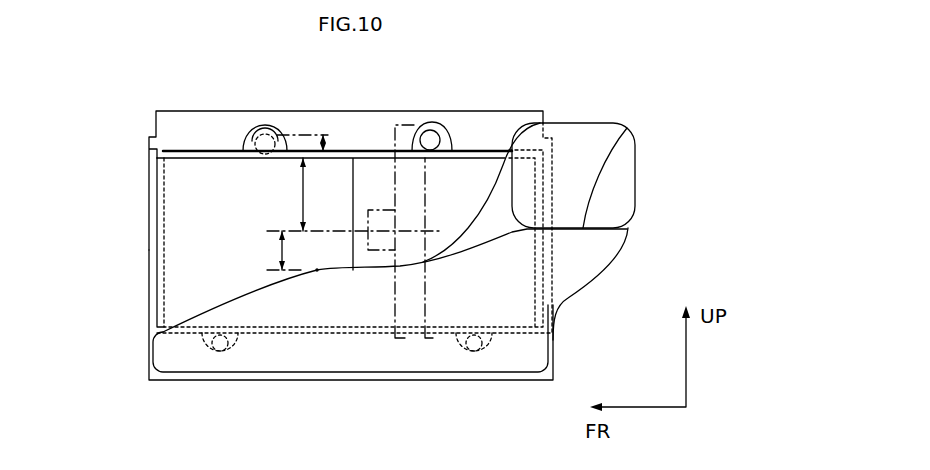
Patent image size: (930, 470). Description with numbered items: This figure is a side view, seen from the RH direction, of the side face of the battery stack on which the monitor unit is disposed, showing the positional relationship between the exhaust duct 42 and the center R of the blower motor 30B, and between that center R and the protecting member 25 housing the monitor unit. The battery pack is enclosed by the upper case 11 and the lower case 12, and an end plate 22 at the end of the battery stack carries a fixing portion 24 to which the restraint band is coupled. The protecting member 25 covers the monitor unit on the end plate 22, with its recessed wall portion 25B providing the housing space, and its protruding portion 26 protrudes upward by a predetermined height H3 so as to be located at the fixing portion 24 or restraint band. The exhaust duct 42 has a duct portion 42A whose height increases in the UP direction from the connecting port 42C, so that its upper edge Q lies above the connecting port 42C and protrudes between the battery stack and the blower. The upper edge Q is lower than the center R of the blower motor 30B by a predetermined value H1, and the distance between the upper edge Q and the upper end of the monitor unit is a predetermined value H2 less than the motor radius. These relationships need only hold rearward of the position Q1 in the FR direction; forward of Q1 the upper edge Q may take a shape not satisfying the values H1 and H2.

The upper case 11 is at (155, 112).
The lower case 12 is at (173, 379).
The end plate 22 is at (365, 150).
The fixing portion 24 is at (265, 125).
The protecting member 25 is at (157, 150).
The wall portion 25B is at (200, 237).
The protruding portion 26 is at (245, 148).
The blower motor 30B is at (408, 122).
The exhaust duct 42 is at (592, 123).
The duct portion 42A is at (342, 293).
The connecting port 42C is at (620, 192).
The predetermined value H1 is at (281, 249).
The predetermined value H2 is at (302, 192).
The predetermined height H3 is at (323, 133).
The upper edge Q is at (205, 312).
The position Q1 is at (317, 271).
The center R is at (441, 231).